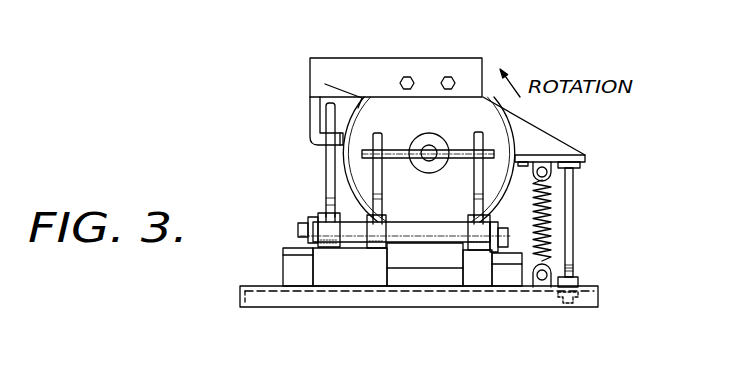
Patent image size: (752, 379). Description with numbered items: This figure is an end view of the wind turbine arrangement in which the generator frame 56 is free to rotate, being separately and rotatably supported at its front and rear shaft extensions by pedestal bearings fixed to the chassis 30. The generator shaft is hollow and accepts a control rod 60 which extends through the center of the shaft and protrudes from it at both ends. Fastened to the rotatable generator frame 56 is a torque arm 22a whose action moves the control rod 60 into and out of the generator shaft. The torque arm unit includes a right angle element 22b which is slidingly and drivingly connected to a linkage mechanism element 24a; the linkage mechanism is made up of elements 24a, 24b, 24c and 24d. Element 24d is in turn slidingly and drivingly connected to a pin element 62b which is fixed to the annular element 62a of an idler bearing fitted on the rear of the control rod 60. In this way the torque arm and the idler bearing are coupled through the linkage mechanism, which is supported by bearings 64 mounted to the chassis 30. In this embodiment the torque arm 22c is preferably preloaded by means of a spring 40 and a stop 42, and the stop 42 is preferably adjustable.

The torque arm 22a is at (337, 58).
The generator frame 56 is at (325, 82).
The control rod 60 is at (425, 148).
The annular element 62a is at (436, 139).
The pin element 62b is at (515, 152).
The torque arm 22c is at (585, 142).
The stop 42 is at (580, 170).
The spring 40 is at (552, 222).
The right angle element 22b is at (307, 134).
The linkage mechanism element 24a is at (327, 190).
The linkage mechanism element 24d is at (476, 194).
The linkage mechanism element 24b is at (298, 228).
The linkage mechanism element 24c is at (350, 240).
The bearings 64 is at (283, 258).
The chassis 30 is at (385, 290).